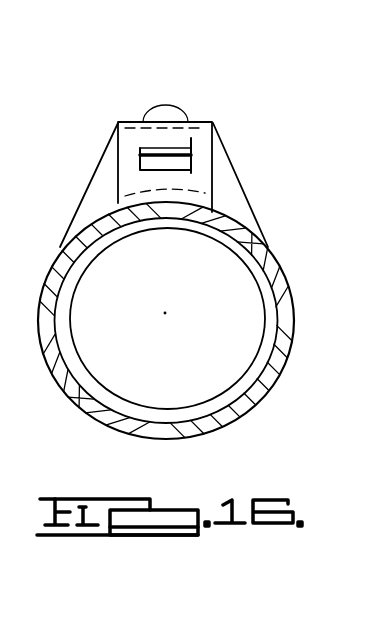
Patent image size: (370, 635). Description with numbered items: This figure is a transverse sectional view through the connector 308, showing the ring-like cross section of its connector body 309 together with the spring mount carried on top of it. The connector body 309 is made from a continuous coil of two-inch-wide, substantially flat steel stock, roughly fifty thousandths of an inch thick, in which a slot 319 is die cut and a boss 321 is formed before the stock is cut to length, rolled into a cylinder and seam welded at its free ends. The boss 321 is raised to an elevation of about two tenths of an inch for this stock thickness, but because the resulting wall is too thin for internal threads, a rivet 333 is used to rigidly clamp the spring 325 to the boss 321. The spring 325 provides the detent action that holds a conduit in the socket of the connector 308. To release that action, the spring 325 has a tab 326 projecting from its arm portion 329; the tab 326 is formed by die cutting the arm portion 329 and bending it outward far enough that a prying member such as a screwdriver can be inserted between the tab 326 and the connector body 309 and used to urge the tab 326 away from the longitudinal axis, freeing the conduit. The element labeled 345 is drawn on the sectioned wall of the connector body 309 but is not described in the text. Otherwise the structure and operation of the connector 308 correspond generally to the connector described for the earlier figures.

The connector 308 is at (48, 263).
The connector body 309 is at (247, 413).
The slot 319 is at (203, 194).
The boss 321 is at (247, 183).
The spring 325 is at (129, 118).
The tab 326 is at (162, 148).
The arm portion 329 is at (118, 172).
The rivet 333 is at (179, 108).
The ring wall section 345 is at (153, 212).